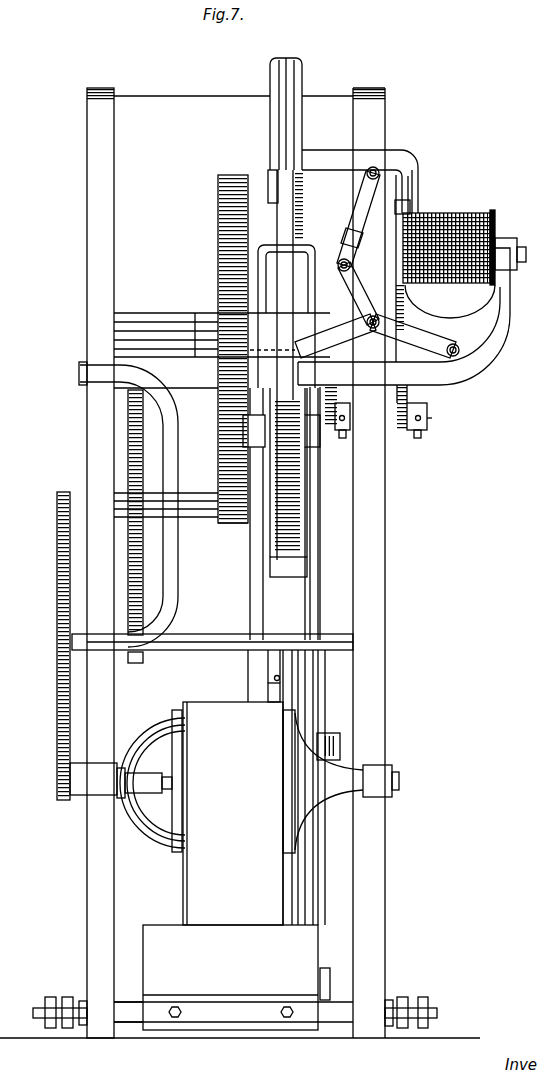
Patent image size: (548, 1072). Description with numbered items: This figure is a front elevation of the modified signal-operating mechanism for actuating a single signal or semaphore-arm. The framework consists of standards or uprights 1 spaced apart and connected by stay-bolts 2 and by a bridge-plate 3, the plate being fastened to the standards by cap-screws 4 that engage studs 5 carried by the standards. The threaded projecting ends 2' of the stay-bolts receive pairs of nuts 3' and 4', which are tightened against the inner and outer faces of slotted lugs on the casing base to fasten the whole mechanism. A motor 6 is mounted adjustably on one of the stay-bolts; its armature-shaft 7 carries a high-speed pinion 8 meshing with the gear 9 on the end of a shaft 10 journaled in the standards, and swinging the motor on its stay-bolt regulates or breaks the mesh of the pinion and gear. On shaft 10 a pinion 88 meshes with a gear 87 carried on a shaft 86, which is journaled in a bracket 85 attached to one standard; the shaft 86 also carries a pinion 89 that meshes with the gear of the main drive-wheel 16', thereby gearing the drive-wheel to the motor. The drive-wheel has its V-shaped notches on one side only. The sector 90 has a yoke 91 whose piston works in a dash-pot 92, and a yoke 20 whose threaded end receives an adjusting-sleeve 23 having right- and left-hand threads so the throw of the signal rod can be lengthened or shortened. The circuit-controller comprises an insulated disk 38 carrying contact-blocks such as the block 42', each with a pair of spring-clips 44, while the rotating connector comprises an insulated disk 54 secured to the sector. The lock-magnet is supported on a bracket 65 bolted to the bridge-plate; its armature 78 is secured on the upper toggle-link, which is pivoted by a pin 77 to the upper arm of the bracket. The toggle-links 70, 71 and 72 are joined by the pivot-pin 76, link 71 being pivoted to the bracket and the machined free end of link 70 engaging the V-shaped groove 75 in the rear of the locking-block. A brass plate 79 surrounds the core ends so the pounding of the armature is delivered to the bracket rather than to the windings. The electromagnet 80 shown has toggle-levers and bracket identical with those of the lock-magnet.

The standards or uprights 1 is at (87, 243).
The bridge-plate 3 is at (240, 563).
The adjusting-sleeve 23 is at (270, 137).
The drive-wheel 16' is at (213, 349).
The pinion 89 is at (234, 524).
The yoke 20 is at (258, 282).
The shaft 86 is at (180, 492).
The bracket 85 is at (176, 598).
The gear 87 is at (143, 567).
The pinion 88 is at (137, 670).
The gear 9 is at (57, 596).
The high-speed pinion 8 is at (57, 781).
The armature-shaft 7 is at (150, 786).
The shaft 10 is at (222, 634).
The motor 6 is at (259, 813).
The dash-pot 92 is at (248, 675).
The studs 5 is at (280, 1012).
The stay-bolts 2 is at (128, 999).
The projecting ends of the stay-bolts 2' is at (233, 1012).
The nuts 4' is at (46, 1002).
The nuts 3' is at (235, 1002).
The cap-screws 4 is at (427, 1002).
The pin 77 is at (418, 168).
The brass plate 79 is at (412, 200).
The electromagnet 80 is at (464, 237).
The V-shaped groove 75 is at (352, 213).
The armature 78 is at (341, 238).
The link 72 is at (351, 266).
The pivot-pin 76 is at (337, 339).
The link 71 is at (449, 343).
The link 70 is at (322, 364).
The bracket 65 is at (475, 323).
The spring-clips 44 is at (418, 386).
The insulated disk 54 is at (341, 440).
The insulated disk 38 is at (412, 426).
The contact-block 42' is at (448, 416).
The sector 90 is at (289, 578).
The yoke 91 is at (318, 598).